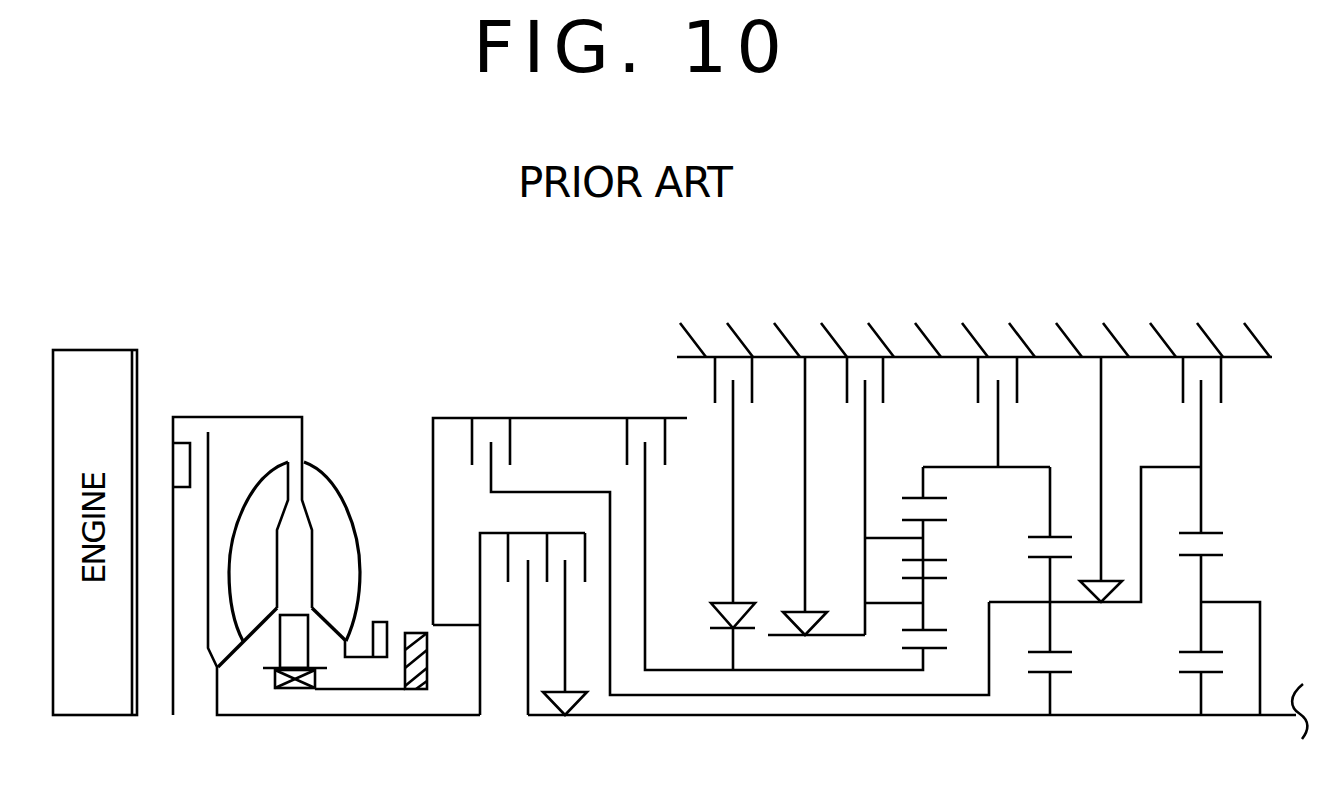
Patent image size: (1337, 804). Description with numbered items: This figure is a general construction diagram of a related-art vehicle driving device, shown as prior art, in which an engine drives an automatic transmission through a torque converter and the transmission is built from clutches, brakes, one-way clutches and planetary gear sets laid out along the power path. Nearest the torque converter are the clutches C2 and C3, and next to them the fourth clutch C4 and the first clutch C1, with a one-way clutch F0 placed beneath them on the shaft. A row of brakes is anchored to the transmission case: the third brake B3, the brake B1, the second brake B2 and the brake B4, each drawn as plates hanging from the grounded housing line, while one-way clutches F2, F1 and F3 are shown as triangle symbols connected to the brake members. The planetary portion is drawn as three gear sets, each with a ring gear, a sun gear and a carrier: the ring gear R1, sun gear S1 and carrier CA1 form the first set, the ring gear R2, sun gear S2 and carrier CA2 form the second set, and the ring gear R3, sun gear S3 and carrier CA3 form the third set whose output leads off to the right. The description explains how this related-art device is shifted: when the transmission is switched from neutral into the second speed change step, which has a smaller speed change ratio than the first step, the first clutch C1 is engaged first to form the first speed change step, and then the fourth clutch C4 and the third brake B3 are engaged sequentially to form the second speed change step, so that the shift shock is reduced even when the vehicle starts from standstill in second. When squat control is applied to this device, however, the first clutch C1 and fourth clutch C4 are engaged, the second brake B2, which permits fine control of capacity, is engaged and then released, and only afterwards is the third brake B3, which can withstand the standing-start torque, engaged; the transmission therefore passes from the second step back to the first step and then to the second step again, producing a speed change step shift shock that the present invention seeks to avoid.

The first clutch C1 is at (556, 612).
The second clutch C2 is at (730, 536).
The third clutch C3 is at (772, 523).
The fourth clutch C4 is at (506, 624).
The first brake B1 is at (865, 364).
The second brake B2 is at (993, 377).
The third brake B3 is at (735, 445).
The fourth brake B4 is at (1200, 410).
The one-way clutch F0 is at (565, 732).
The first one-way clutch F1 is at (812, 496).
The second one-way clutch F2 is at (718, 618).
The third one-way clutch F3 is at (1107, 506).
The first ring gear R1 is at (959, 489).
The second ring gear R2 is at (1034, 512).
The third ring gear R3 is at (1219, 529).
The first sun gear S1 is at (940, 644).
The second sun gear S2 is at (1070, 683).
The third sun gear S3 is at (1216, 687).
The first carrier CA1 is at (876, 537).
The second carrier CA2 is at (1087, 559).
The third carrier CA3 is at (1256, 647).